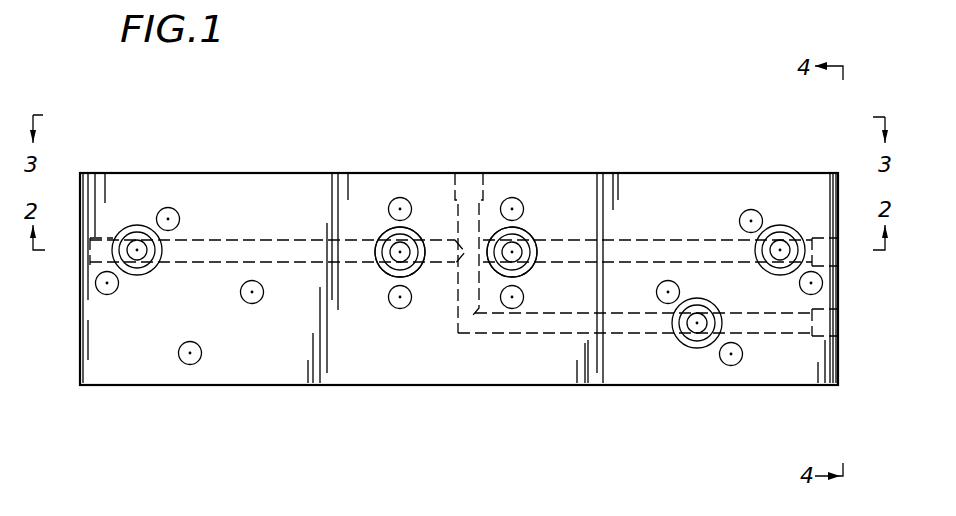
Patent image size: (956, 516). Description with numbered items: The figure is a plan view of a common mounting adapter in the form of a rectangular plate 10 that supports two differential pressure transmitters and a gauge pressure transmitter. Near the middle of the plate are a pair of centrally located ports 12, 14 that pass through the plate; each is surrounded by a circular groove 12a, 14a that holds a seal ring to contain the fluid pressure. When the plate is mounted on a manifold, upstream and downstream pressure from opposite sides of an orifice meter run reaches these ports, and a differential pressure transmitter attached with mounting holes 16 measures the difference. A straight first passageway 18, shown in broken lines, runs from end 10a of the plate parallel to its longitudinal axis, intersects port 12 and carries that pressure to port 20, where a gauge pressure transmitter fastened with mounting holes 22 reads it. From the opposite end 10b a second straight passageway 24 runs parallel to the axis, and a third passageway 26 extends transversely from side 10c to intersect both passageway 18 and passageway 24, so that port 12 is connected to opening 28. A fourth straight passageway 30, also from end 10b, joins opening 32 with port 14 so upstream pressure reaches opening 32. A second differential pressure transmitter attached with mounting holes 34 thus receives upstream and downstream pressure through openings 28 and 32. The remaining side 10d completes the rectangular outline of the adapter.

The rectangular plate 10 is at (623, 375).
The end of the plate 10a is at (79, 358).
The end of the adapter 10b is at (840, 355).
The side of the adapter 10c is at (698, 173).
The bottom side of block 10d is at (320, 384).
The port 12 is at (397, 247).
The circular groove 12a is at (417, 268).
The port 14 is at (512, 252).
The circular groove 14a is at (533, 253).
The mounting holes 16 is at (405, 198).
The first bore or passageway 18 is at (236, 243).
The port 20 is at (137, 250).
The mounting holes 22 is at (170, 208).
The second straight bore or passageway 24 is at (557, 327).
The third passageway 26 is at (467, 302).
The opening 28 is at (695, 332).
The fourth straight passageway 30 is at (673, 243).
The opening 32 is at (781, 250).
The mounting holes 34 is at (752, 209).